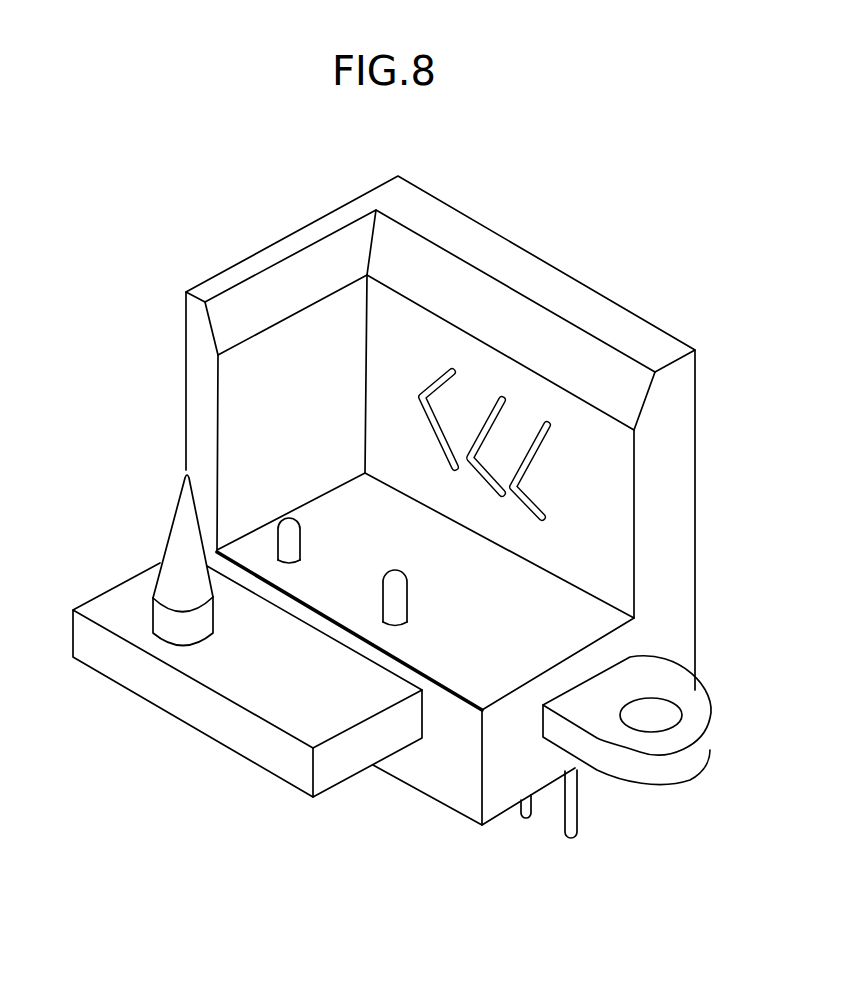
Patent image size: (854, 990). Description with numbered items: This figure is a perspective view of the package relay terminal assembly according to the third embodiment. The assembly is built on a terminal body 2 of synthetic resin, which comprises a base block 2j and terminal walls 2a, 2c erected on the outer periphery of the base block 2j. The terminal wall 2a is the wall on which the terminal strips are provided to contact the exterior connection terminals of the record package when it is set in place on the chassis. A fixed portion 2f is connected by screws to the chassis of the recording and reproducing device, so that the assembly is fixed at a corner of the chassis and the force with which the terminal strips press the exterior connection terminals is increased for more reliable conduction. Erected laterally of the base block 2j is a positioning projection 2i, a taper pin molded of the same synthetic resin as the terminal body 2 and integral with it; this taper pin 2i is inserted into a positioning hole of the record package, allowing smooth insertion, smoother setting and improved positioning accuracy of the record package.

The terminal body 2 is at (392, 537).
The terminal wall 2a is at (543, 548).
The terminal wall 2c is at (323, 473).
The fixed portion 2f is at (607, 755).
The positioning projection 2i is at (185, 633).
The base block 2j is at (430, 653).